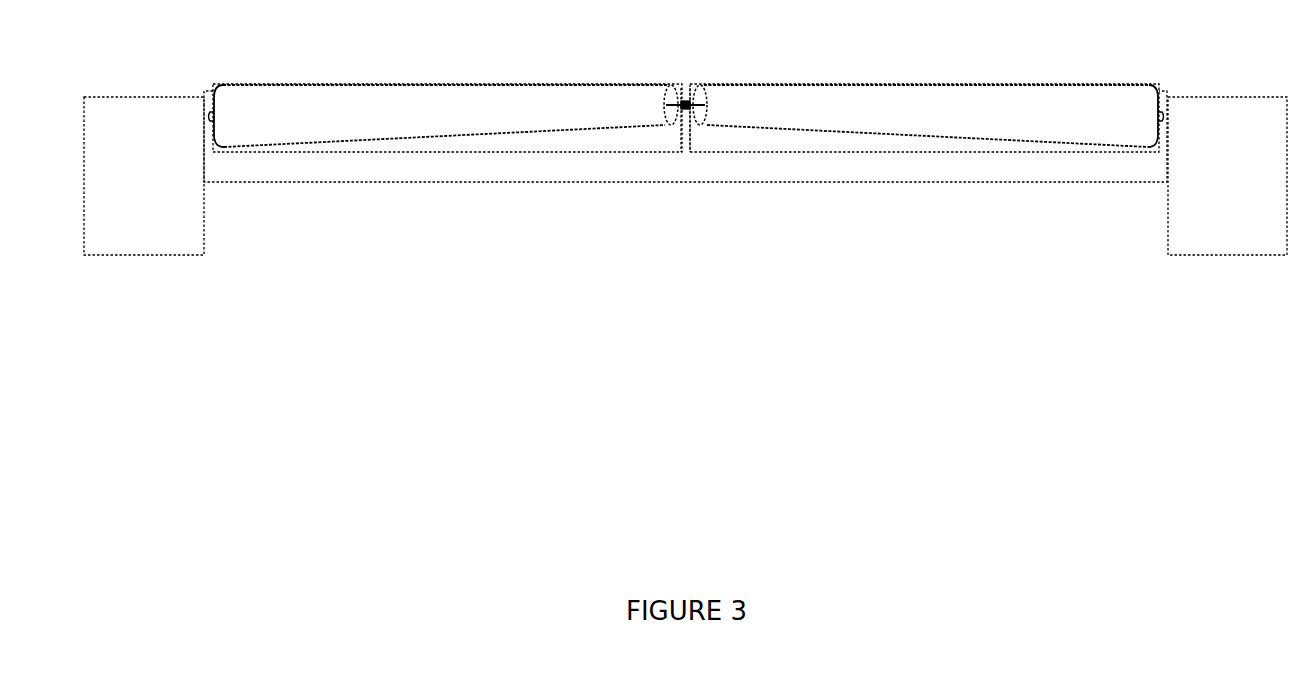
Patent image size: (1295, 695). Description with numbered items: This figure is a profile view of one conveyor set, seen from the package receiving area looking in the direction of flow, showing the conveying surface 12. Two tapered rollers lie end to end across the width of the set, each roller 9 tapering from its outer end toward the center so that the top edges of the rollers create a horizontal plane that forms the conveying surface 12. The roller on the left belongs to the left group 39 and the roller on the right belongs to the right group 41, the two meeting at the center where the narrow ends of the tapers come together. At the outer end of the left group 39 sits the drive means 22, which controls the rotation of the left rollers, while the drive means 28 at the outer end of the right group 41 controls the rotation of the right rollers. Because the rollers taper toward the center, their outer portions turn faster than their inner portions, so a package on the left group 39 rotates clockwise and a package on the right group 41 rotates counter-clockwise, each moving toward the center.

The roller 9 is at (686, 81).
The conveying surface 12 is at (685, 79).
The drive means 22 is at (144, 176).
The drive means 28 is at (1227, 176).
The left group 39 is at (680, 81).
The right group 41 is at (690, 81).